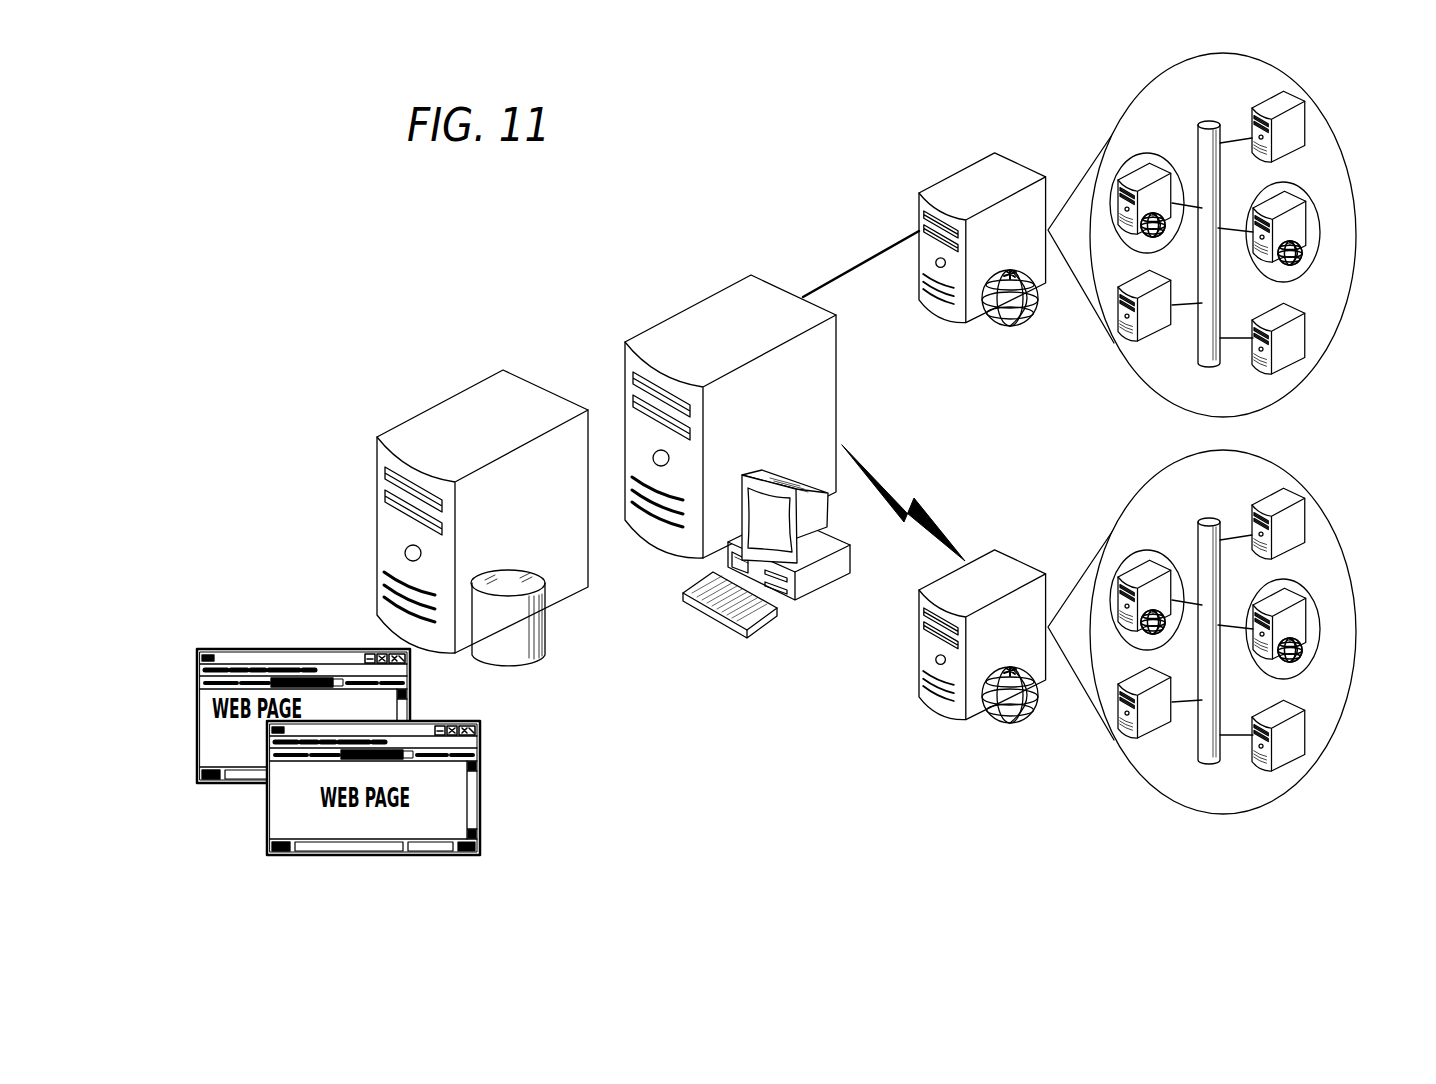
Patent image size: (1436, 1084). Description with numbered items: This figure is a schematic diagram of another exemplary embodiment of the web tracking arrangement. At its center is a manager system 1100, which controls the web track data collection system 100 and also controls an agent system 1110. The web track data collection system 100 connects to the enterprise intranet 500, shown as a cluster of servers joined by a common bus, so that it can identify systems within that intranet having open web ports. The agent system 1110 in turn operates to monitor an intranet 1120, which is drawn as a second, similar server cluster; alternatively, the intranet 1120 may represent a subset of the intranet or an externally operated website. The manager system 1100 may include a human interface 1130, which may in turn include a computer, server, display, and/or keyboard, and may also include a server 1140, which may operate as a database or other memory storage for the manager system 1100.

The web track data collection system 100 is at (968, 165).
The enterprise intranet 500 is at (1287, 72).
The manager system 1100 is at (695, 313).
The agent system 1110 is at (1005, 562).
The intranet 1120 is at (1330, 513).
The human interface 1130 is at (813, 593).
The server 1140 is at (452, 408).